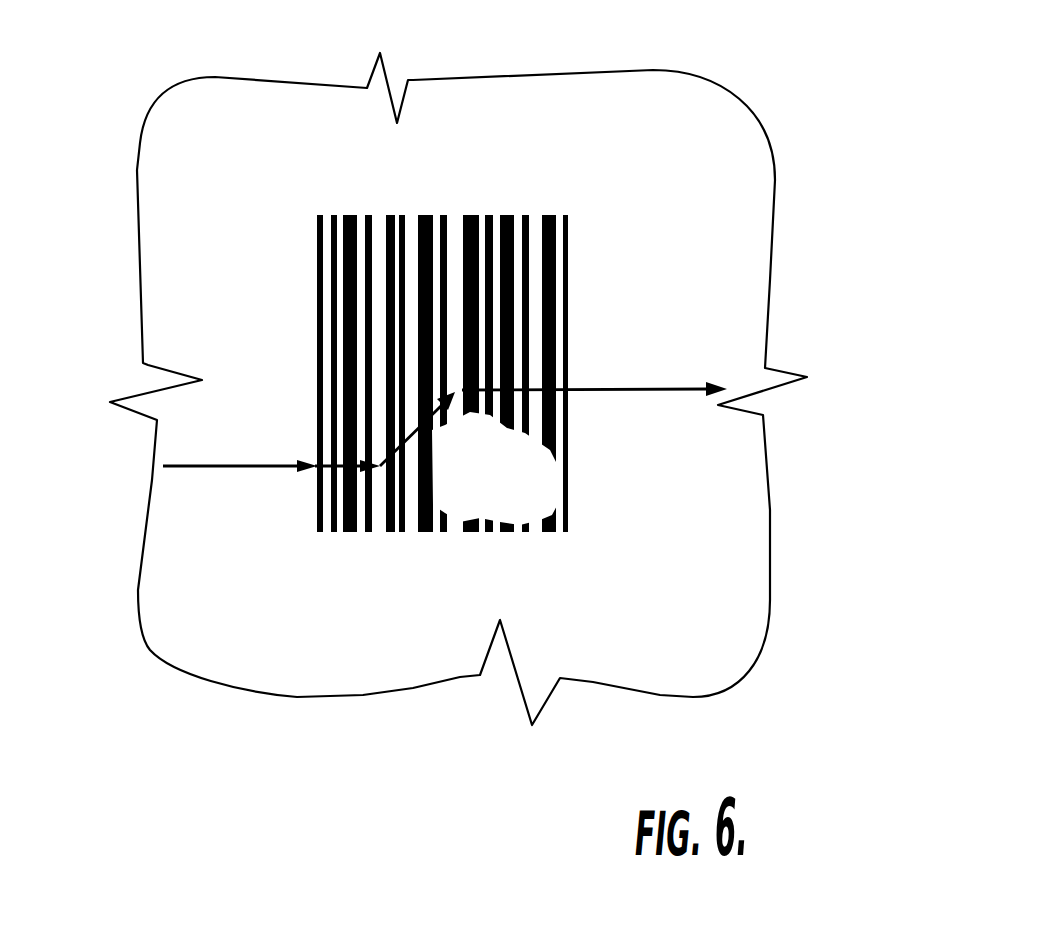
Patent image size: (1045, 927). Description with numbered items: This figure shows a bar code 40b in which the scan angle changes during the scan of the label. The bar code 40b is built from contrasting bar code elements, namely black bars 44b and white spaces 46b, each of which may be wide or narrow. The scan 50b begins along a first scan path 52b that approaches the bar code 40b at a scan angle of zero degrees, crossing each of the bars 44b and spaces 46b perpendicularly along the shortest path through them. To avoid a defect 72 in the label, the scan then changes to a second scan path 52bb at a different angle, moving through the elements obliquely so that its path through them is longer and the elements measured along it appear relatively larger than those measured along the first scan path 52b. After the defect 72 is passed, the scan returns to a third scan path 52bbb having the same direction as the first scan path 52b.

The bar code 40b is at (552, 194).
The black bars 44b is at (350, 215).
The white spaces 46b is at (378, 222).
The scan 50b is at (182, 467).
The first scan path 52b is at (228, 466).
The second scan path 52bb is at (360, 575).
The third scan path 52bbb is at (613, 388).
The defect 72 is at (515, 482).